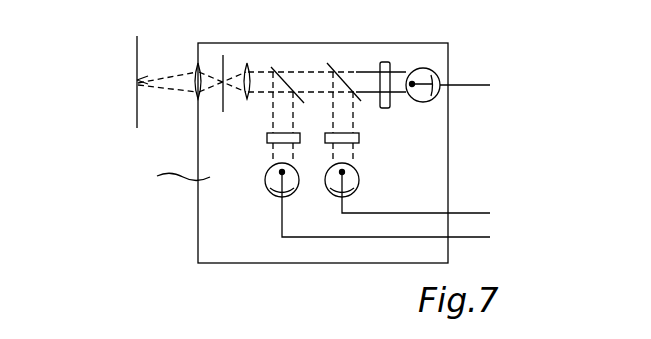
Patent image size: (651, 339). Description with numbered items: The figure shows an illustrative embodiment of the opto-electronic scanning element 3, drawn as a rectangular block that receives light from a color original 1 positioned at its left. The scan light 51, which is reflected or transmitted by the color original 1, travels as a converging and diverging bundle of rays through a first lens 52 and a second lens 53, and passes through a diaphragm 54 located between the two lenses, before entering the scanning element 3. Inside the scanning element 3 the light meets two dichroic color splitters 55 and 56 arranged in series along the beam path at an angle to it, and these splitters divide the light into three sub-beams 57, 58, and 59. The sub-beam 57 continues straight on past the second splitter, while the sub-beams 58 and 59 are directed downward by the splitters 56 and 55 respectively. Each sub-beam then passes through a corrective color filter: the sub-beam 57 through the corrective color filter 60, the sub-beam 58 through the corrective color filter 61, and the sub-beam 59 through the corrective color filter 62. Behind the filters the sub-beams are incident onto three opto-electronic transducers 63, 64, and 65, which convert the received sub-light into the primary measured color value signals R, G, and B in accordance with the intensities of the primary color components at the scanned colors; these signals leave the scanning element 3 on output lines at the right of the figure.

The color original 1 is at (137, 112).
The opto-electronic scanning element 3 is at (199, 203).
The scan light 51 is at (166, 80).
The lens 52 is at (195, 72).
The lens 53 is at (249, 63).
The diaphragm 54 is at (224, 63).
The dichroic color splitter 55 is at (274, 67).
The dichroic color splitter 56 is at (332, 63).
The sub-beam 57 is at (360, 76).
The sub-beam 58 is at (346, 110).
The sub-beam 59 is at (286, 110).
The corrective color filter 60 is at (389, 74).
The corrective color filter 61 is at (359, 138).
The corrective color filter 62 is at (267, 138).
The opto-electronic transducer 63 is at (425, 70).
The opto-electronic transducer 64 is at (358, 174).
The opto-electronic transducer 65 is at (267, 180).